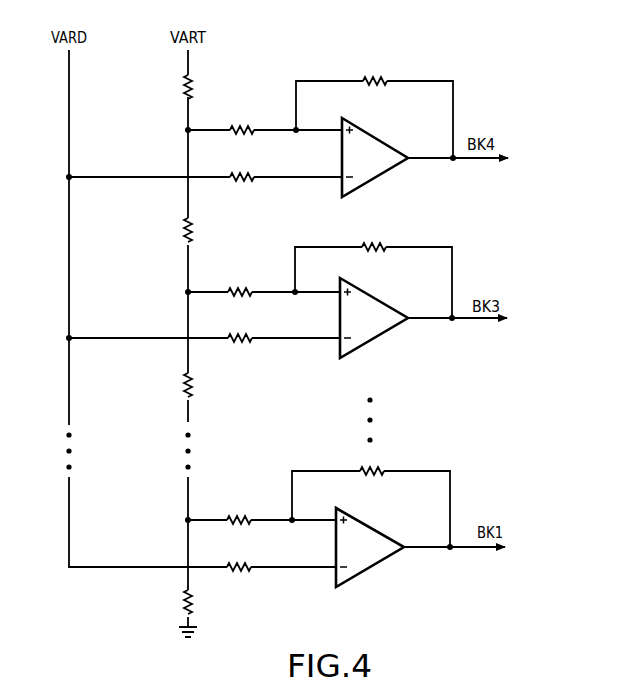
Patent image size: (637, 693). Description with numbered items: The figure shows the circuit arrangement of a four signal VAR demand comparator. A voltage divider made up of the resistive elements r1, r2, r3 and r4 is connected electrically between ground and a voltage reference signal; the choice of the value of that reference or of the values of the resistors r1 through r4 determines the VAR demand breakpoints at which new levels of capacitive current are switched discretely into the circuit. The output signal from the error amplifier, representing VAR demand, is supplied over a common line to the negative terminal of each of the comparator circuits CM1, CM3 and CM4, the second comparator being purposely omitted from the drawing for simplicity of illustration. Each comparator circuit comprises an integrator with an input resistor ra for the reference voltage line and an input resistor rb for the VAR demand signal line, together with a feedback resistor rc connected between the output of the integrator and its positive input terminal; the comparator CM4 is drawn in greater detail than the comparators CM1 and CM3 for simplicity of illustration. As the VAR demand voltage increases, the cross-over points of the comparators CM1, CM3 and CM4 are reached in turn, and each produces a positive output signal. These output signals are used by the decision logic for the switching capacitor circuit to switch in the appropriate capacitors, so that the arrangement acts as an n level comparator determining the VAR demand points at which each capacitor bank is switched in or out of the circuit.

The resistive element r4 is at (184, 86).
The resistive element r3 is at (177, 229).
The resistive element r2 is at (177, 387).
The resistive element r1 is at (179, 600).
The input resistor ra is at (237, 508).
The input resistor rb is at (238, 560).
The feedback resistor rc is at (380, 462).
The comparator circuit CM4 is at (392, 117).
The comparator circuit CM3 is at (394, 282).
The comparator circuit CM1 is at (384, 504).